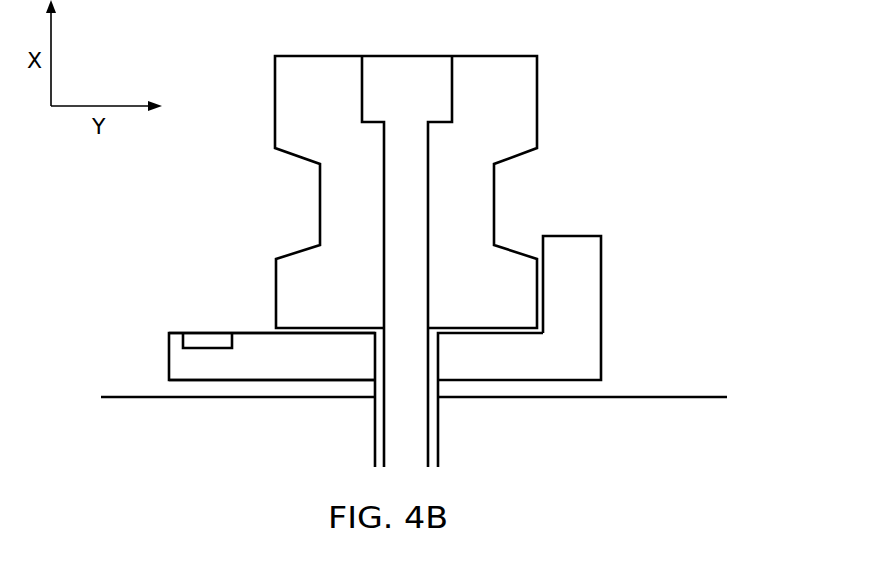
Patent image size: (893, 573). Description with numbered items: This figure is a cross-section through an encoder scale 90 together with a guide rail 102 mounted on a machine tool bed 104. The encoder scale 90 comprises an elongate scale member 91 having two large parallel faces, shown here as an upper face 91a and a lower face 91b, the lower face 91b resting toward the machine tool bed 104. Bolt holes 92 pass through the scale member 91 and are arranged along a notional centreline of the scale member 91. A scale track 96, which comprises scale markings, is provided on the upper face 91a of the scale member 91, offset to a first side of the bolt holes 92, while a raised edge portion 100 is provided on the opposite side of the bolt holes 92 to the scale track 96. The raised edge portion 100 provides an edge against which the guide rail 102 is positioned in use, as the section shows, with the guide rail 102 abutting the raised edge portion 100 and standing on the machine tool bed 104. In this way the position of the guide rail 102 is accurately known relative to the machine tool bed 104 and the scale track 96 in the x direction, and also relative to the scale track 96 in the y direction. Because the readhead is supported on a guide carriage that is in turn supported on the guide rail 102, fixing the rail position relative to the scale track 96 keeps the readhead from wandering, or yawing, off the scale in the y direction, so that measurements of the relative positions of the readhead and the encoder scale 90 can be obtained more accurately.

The encoder scale 90 is at (646, 298).
The scale member 91 is at (234, 356).
The upper face 91a is at (257, 332).
The lower face 91b is at (262, 381).
The bolt holes 92 is at (439, 345).
The scale track 96 is at (205, 341).
The raised edge portion 100 is at (541, 289).
The guide rail 102 is at (515, 88).
The machine tool bed 104 is at (572, 451).